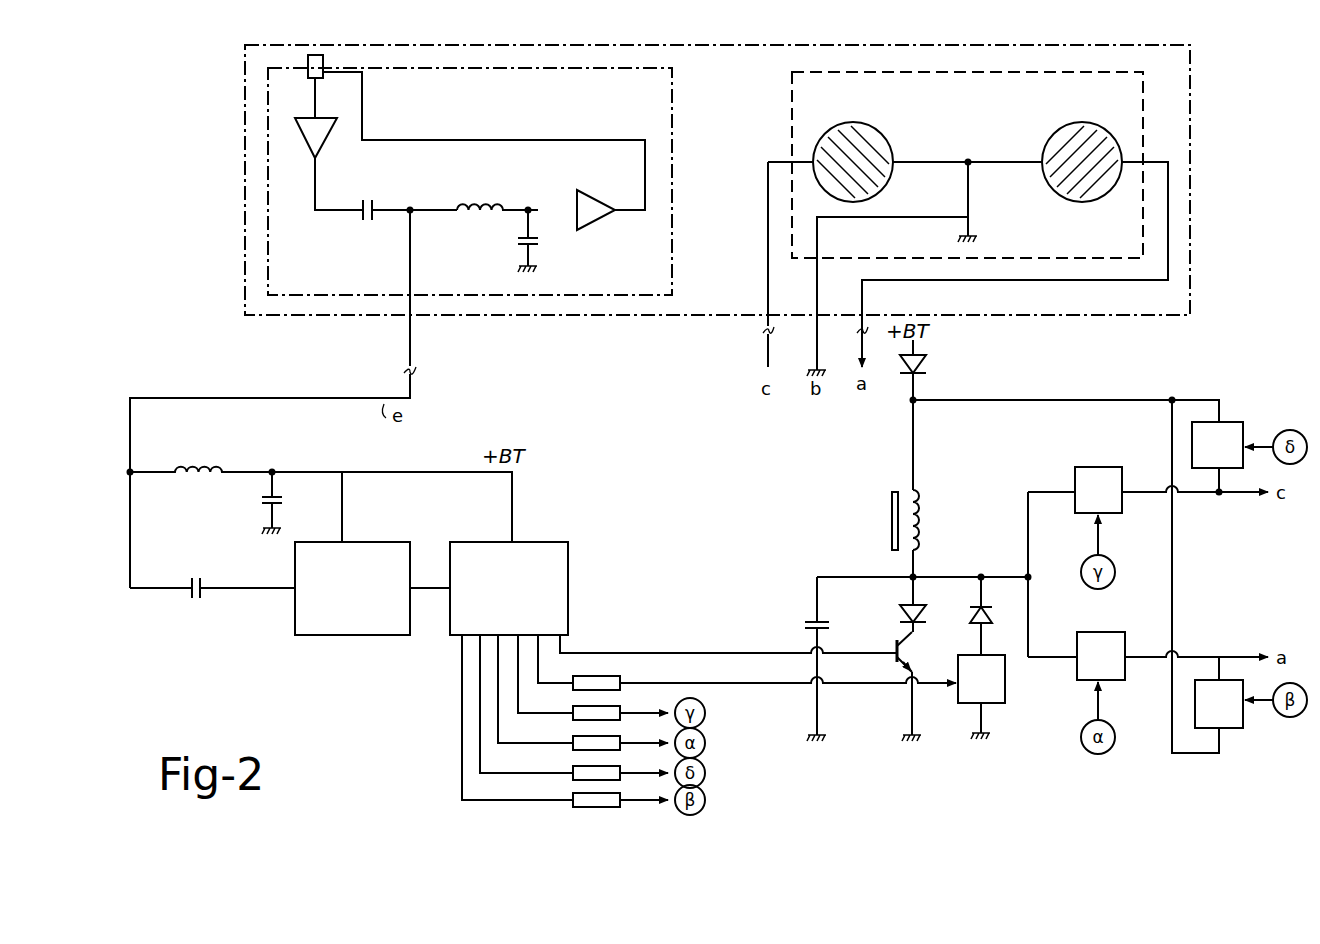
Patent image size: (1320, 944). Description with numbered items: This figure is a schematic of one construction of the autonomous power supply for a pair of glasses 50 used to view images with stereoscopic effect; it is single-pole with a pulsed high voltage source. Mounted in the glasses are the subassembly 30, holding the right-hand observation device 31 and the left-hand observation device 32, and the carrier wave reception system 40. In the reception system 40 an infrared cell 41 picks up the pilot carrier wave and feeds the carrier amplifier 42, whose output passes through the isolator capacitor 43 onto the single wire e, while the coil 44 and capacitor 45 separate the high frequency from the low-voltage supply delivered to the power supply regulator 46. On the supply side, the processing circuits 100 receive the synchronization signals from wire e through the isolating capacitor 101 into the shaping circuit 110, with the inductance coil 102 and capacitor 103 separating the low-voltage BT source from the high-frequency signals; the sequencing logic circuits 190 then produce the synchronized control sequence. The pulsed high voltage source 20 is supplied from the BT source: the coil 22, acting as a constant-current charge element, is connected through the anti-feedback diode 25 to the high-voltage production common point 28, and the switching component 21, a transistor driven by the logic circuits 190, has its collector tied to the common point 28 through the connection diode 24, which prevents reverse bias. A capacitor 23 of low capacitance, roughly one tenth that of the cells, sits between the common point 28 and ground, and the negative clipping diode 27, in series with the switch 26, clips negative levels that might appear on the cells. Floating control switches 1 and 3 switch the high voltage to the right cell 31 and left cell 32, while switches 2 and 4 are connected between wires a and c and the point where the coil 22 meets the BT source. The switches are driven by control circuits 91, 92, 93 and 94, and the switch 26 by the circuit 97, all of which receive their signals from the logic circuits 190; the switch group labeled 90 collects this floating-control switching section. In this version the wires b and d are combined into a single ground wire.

The floating control switch 1 is at (1108, 632).
The floating control switch 2 is at (1238, 728).
The floating control switch 3 is at (1102, 467).
The floating control switch 4 is at (1247, 430).
The pulsed high voltage source 20 is at (854, 560).
The switching component 21 is at (893, 644).
The coil 22 is at (921, 520).
The capacitor 23 is at (804, 624).
The connection diode 24 is at (922, 618).
The anti-feedback diode 25 is at (928, 362).
The switch 26 is at (1005, 700).
The negative clipping diode 27 is at (1000, 636).
The high-voltage production common point 28 is at (981, 576).
The subassembly 30 is at (788, 118).
The right-hand observation device 31 is at (1048, 135).
The left-hand observation device 32 is at (886, 148).
The carrier wave reception system 40 is at (684, 178).
The infrared cell 41 is at (306, 78).
The carrier amplifier 42 is at (312, 150).
The isolator capacitor 43 is at (373, 206).
The coil 44 is at (498, 206).
The capacitor 45 is at (520, 244).
The power supply regulator 46 is at (612, 190).
The pair of glasses 50 is at (238, 312).
The output circuit 90 is at (1043, 728).
The control circuit 91 is at (572, 739).
The control circuit 92 is at (572, 798).
The control circuit 93 is at (572, 709).
The control circuit 94 is at (572, 769).
The control circuit 97 is at (610, 675).
The processing circuits 100 is at (418, 668).
The isolating capacitor 101 is at (205, 596).
The inductance coil 102 is at (206, 468).
The capacitor 103 is at (262, 506).
The shaping circuit 110 is at (330, 636).
The sequencing logic circuits 190 is at (569, 546).